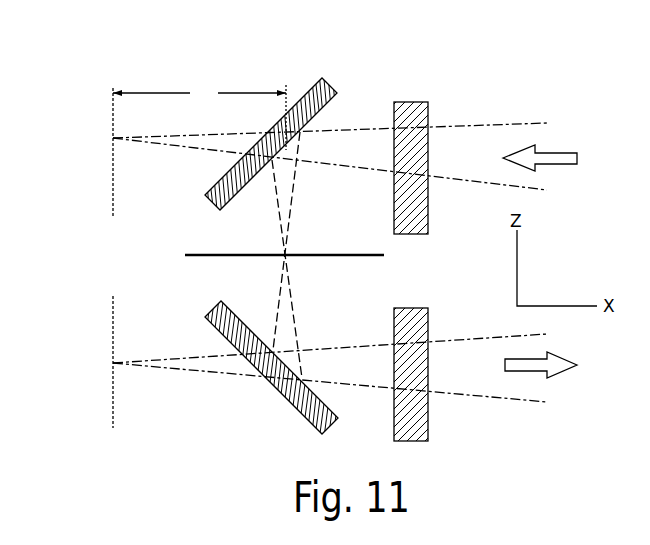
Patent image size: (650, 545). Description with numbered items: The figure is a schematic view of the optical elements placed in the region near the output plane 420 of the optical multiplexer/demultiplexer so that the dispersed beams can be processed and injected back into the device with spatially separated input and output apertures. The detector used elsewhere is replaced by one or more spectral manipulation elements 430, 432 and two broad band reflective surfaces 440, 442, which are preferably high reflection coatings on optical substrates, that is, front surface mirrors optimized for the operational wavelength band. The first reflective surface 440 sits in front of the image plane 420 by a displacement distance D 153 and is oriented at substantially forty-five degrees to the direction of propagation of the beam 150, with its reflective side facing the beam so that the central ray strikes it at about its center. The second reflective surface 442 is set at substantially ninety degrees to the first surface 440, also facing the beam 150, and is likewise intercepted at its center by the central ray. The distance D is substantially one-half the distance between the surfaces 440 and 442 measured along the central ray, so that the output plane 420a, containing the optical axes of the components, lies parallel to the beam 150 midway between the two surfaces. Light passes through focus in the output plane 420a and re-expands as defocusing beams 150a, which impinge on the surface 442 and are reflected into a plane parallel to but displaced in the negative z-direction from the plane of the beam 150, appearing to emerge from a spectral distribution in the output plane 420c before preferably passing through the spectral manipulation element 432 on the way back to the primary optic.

The output plane 420 is at (113, 118).
The output plane 420a is at (185, 255).
The output plane 420c is at (113, 410).
The displacement distance D 153 is at (199, 117).
The beam 150 is at (498, 122).
The defocusing beams 150a is at (545, 402).
The first reflective surface 440 is at (322, 80).
The second reflective surface 442 is at (307, 419).
The spectral manipulation element 430 is at (410, 102).
The spectral manipulation element 432 is at (428, 432).